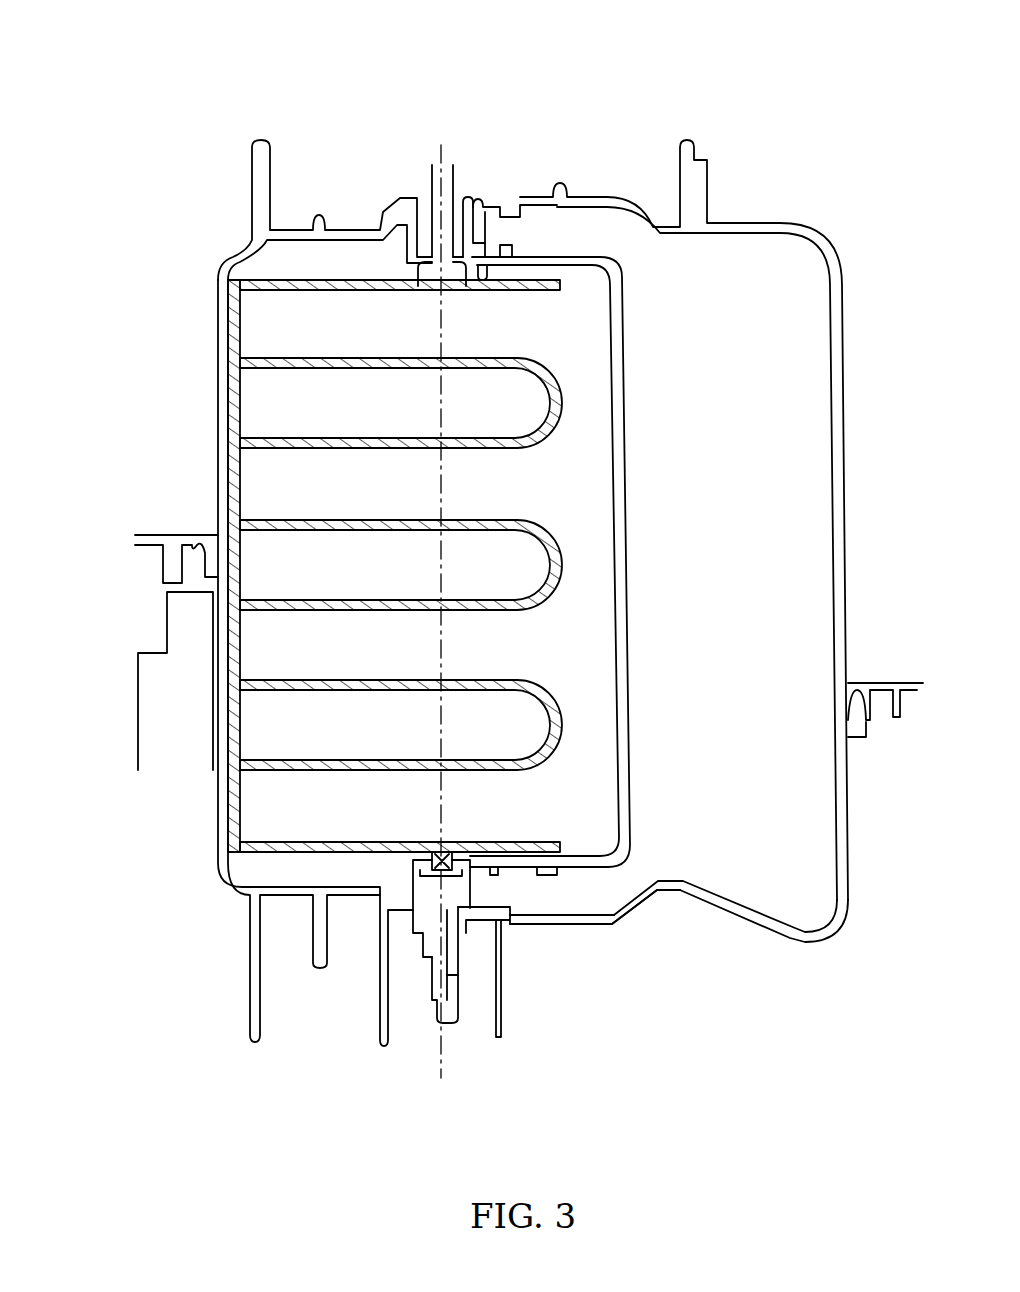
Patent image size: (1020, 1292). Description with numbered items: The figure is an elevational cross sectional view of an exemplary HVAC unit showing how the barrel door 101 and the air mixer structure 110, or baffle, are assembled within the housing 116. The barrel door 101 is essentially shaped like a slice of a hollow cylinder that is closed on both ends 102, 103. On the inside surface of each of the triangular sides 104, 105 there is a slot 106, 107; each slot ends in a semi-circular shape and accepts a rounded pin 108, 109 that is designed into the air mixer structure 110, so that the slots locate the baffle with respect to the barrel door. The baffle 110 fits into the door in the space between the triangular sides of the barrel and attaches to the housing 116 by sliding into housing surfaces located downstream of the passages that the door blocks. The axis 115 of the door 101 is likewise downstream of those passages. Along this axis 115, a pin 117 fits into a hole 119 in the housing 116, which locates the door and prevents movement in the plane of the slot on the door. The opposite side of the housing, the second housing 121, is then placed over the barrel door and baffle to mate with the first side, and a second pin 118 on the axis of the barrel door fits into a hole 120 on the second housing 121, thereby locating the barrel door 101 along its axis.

The barrel door 101 is at (602, 868).
The closed end 102 is at (518, 870).
The closed end 103 is at (518, 230).
The triangular side 104 is at (474, 845).
The triangular side 105 is at (482, 262).
The slot 106 is at (423, 968).
The slot 107 is at (432, 168).
The pin 108 is at (432, 842).
The pin 109 is at (438, 272).
The air mixer structure 110 is at (290, 290).
The axis 115 is at (444, 158).
The housing 116 is at (770, 220).
The pin 117 is at (462, 935).
The second pin 118 is at (465, 197).
The hole 119 is at (460, 925).
The hole 120 is at (398, 193).
The second housing 121 is at (783, 942).